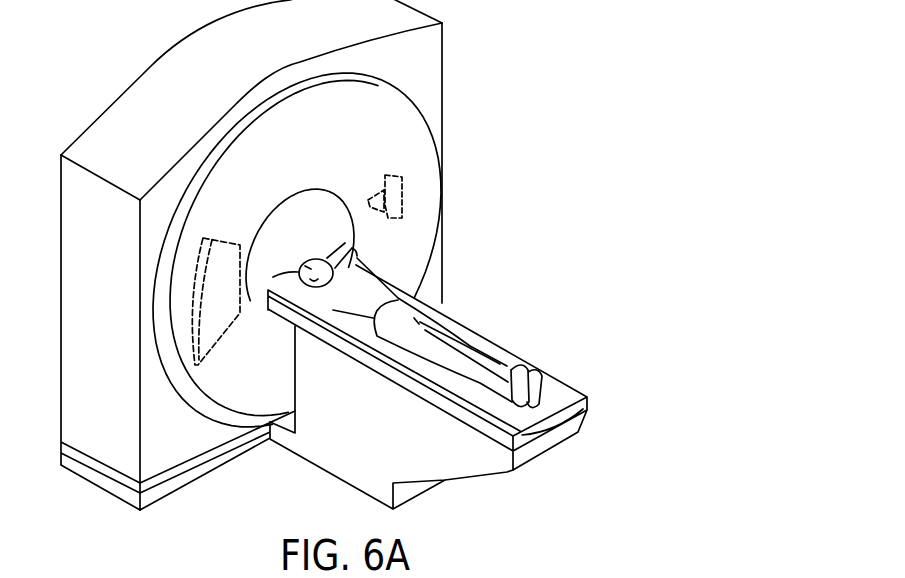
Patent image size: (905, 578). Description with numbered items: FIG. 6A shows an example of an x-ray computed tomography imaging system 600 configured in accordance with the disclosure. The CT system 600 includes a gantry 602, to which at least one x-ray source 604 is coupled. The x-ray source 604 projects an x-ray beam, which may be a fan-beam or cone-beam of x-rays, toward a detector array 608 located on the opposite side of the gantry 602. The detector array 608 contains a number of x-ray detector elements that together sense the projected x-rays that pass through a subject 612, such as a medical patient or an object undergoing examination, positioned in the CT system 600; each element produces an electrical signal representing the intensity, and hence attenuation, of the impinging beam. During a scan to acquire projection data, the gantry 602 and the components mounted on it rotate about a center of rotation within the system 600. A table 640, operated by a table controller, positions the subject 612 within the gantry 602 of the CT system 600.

The x-ray computed tomography imaging system 600 is at (530, 70).
The gantry 602 is at (438, 157).
The x-ray source 604 is at (385, 162).
The detector array 608 is at (233, 232).
The subject 612 is at (378, 265).
The table 640 is at (572, 386).